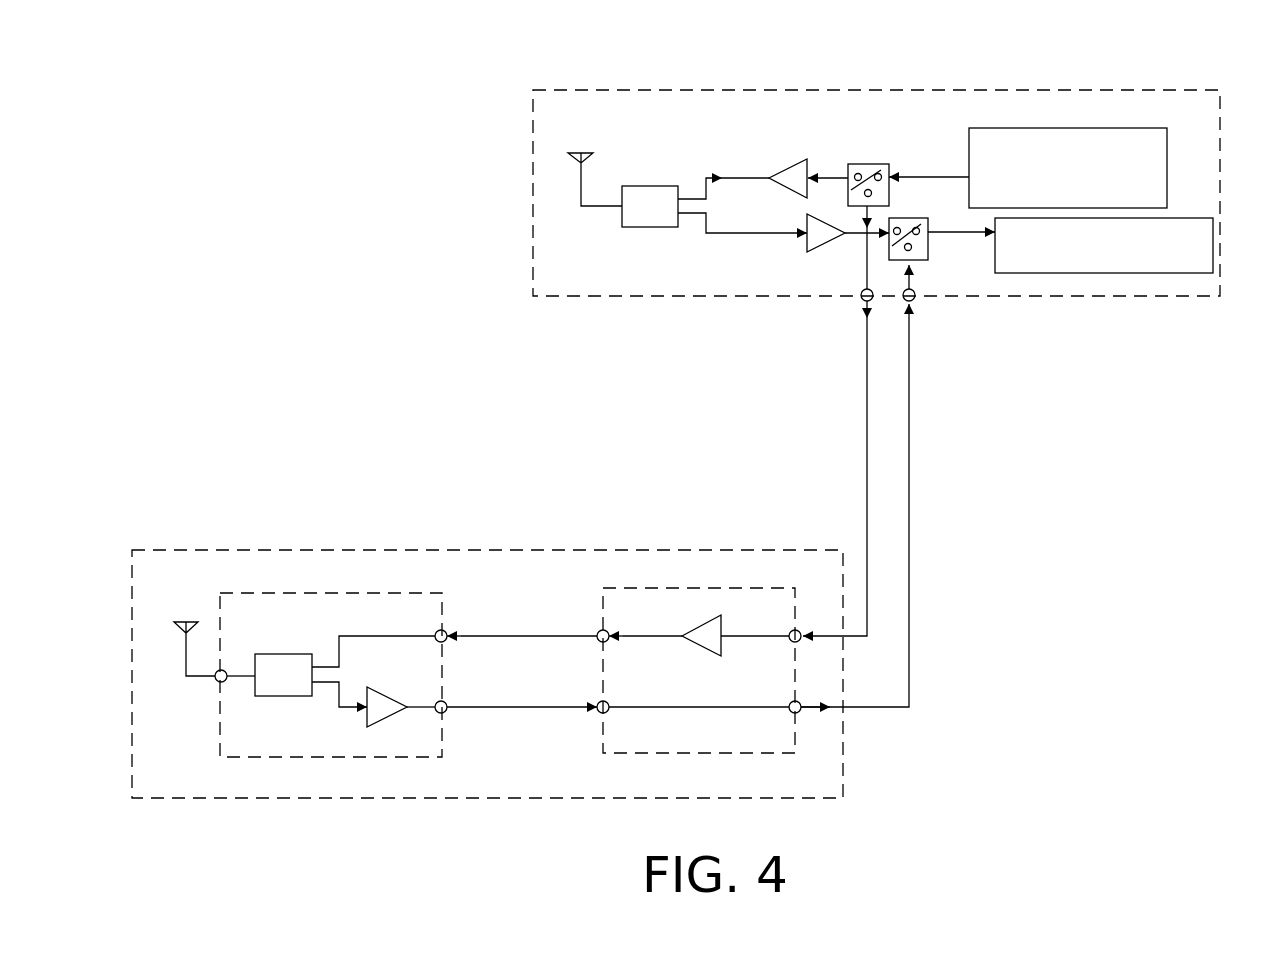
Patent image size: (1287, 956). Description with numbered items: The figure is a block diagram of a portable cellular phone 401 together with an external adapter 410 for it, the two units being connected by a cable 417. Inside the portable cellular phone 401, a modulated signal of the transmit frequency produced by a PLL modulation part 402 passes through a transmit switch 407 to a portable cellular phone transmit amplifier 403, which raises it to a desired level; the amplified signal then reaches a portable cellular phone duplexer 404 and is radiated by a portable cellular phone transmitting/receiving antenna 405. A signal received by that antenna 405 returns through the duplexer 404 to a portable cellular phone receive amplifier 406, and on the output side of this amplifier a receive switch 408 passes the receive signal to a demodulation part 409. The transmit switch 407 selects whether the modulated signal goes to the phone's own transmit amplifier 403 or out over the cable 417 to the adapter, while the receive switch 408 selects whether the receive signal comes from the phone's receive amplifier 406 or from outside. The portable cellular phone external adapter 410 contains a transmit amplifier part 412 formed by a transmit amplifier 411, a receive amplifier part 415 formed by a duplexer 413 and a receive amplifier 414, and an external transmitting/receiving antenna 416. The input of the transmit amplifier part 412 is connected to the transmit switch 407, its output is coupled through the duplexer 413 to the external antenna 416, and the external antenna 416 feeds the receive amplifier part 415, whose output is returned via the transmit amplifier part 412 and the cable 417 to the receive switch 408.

The portable cellular phone 401 is at (558, 90).
The PLL modulation part 402 is at (1078, 128).
The portable cellular phone transmit amplifier 403 is at (800, 159).
The portable cellular phone duplexer 404 is at (650, 186).
The portable cellular phone transmitting/receiving antenna 405 is at (572, 157).
The portable cellular phone receive amplifier 406 is at (823, 253).
The transmit switch 407 is at (875, 164).
The receive switch 408 is at (928, 253).
The demodulation part 409 is at (1123, 273).
The portable cellular phone external adapter 410 is at (158, 550).
The transmit amplifier 411 is at (714, 615).
The transmit amplifier part 412 is at (612, 588).
The duplexer 413 is at (287, 696).
The receive amplifier 414 is at (385, 725).
The receive amplifier part 415 is at (433, 757).
The external transmitting/receiving antenna 416 is at (190, 622).
The cable 417 is at (867, 488).